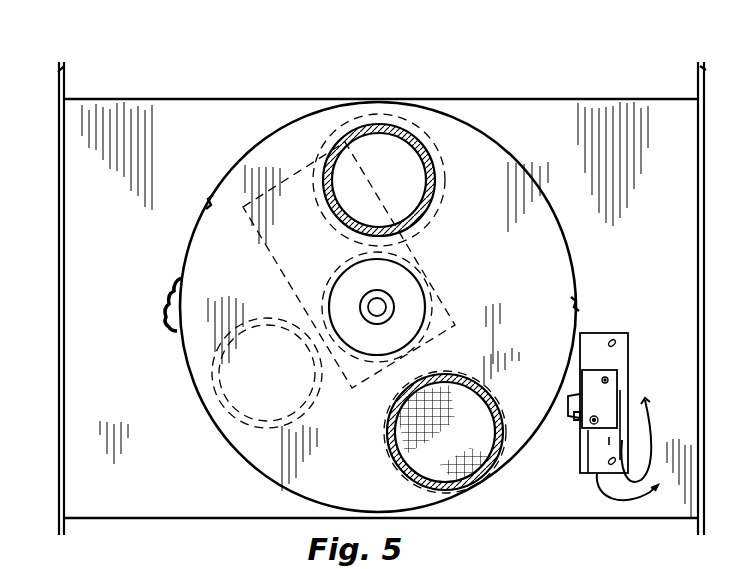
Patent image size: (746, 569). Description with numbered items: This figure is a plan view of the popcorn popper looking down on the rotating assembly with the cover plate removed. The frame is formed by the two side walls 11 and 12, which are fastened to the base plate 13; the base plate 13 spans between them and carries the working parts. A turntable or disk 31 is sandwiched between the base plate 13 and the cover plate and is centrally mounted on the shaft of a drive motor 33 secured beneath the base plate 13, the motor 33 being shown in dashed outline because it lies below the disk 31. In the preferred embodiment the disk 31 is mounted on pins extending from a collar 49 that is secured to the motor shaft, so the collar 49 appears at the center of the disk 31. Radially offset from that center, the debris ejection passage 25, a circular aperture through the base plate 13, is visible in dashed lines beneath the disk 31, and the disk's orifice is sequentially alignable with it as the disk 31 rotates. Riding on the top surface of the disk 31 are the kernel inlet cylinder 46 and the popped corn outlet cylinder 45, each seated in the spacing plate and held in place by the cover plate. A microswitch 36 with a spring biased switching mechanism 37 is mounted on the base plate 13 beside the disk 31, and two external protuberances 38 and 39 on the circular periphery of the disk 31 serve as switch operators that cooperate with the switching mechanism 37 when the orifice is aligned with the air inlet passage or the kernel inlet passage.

The side wall 11 is at (59, 193).
The side wall 12 is at (704, 192).
The base plate 13 is at (148, 107).
The debris ejection passage 25 is at (216, 404).
The disk 31 is at (246, 162).
The drive motor 33 is at (292, 271).
The microswitch 36 is at (585, 372).
The spring biased switching mechanism 37 is at (568, 406).
The external protuberance 38 is at (170, 310).
The external protuberance 39 is at (558, 416).
The popped corn outlet cylinder 45 is at (390, 448).
The kernel inlet cylinder 46 is at (432, 169).
The collar 49 is at (392, 300).